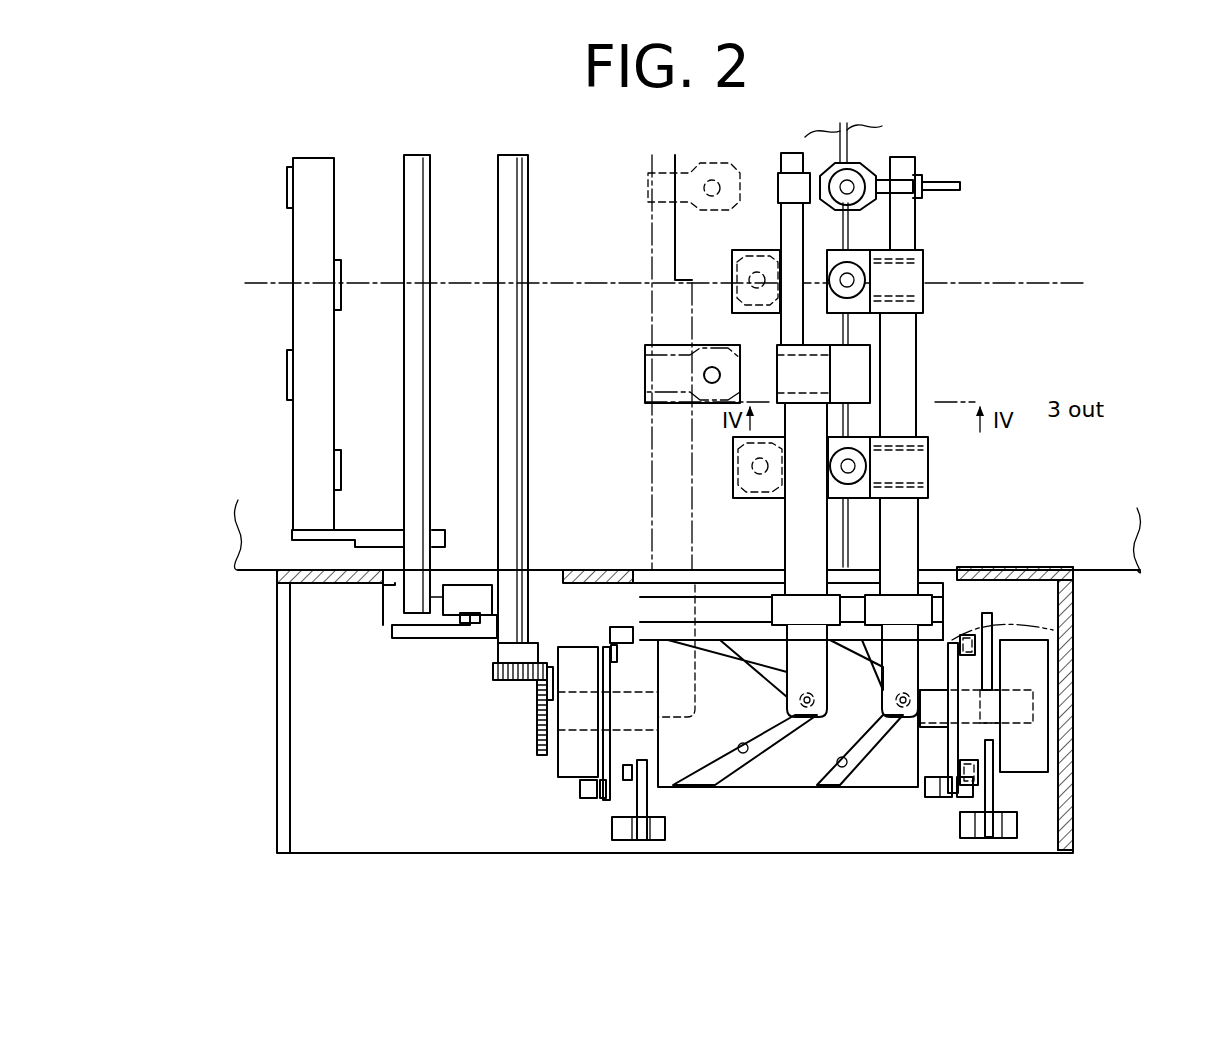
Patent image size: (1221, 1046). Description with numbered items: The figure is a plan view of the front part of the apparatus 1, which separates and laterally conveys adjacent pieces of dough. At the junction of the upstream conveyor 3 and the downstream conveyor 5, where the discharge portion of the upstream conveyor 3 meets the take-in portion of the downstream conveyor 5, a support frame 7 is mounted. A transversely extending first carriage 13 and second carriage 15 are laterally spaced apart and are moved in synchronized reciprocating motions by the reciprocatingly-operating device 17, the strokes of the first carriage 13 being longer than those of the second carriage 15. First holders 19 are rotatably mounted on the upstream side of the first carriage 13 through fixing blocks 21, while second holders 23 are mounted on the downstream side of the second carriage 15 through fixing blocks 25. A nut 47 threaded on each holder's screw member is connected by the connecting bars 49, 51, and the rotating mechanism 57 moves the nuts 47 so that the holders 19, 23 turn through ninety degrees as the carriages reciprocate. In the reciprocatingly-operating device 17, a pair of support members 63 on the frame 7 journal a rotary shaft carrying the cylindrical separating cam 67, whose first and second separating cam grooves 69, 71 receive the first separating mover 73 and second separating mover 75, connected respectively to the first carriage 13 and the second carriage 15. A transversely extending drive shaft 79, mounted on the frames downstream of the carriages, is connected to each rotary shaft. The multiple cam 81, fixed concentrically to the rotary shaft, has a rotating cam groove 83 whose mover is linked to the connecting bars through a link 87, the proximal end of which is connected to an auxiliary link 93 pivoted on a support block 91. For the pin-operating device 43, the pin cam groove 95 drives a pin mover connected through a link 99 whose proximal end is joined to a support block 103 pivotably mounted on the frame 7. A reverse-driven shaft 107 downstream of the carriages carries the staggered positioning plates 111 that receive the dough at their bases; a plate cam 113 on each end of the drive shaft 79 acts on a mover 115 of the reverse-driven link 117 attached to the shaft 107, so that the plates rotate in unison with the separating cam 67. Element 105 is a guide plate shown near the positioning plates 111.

The apparatus 1 is at (1097, 316).
The upstream conveyor 3 is at (1096, 573).
The downstream conveyor 5 is at (238, 577).
The support frame 7 is at (1078, 782).
The first carriage 13 is at (785, 545).
The second carriage 15 is at (918, 545).
The reciprocatingly-operating device 17 is at (816, 792).
The first holder 19 is at (848, 190).
The fixing block 21 is at (777, 380).
The second holder 23 is at (873, 292).
The fixing block 25 is at (776, 313).
The pin-operating device 43 is at (660, 794).
The nut 47 is at (860, 165).
The connecting bar 49 is at (781, 212).
The connecting bar 51 is at (913, 238).
The rotating mechanism 57 is at (592, 823).
The support member 63 is at (558, 762).
The cylindrical separating cam 67 is at (715, 788).
The first separating cam groove 69 is at (743, 743).
The second separating cam groove 71 is at (838, 762).
The first separating mover 73 is at (800, 700).
The second separating mover 75 is at (897, 700).
The drive shaft 79 is at (530, 500).
The multiple cam 81 is at (612, 645).
The rotating cam groove 83 is at (1058, 635).
The link 87 is at (992, 680).
The support block 91 is at (672, 838).
The auxiliary link 93 is at (632, 770).
The pin cam groove 95 is at (990, 628).
The link 99 is at (603, 760).
The support block 103 is at (580, 790).
The guide plate 105 is at (272, 279).
The reverse-driven shaft 107 is at (404, 411).
The positioning plate 111 is at (288, 195).
The cam 113 is at (498, 672).
The mover 115 is at (462, 623).
The reverse-driven link 117 is at (408, 640).